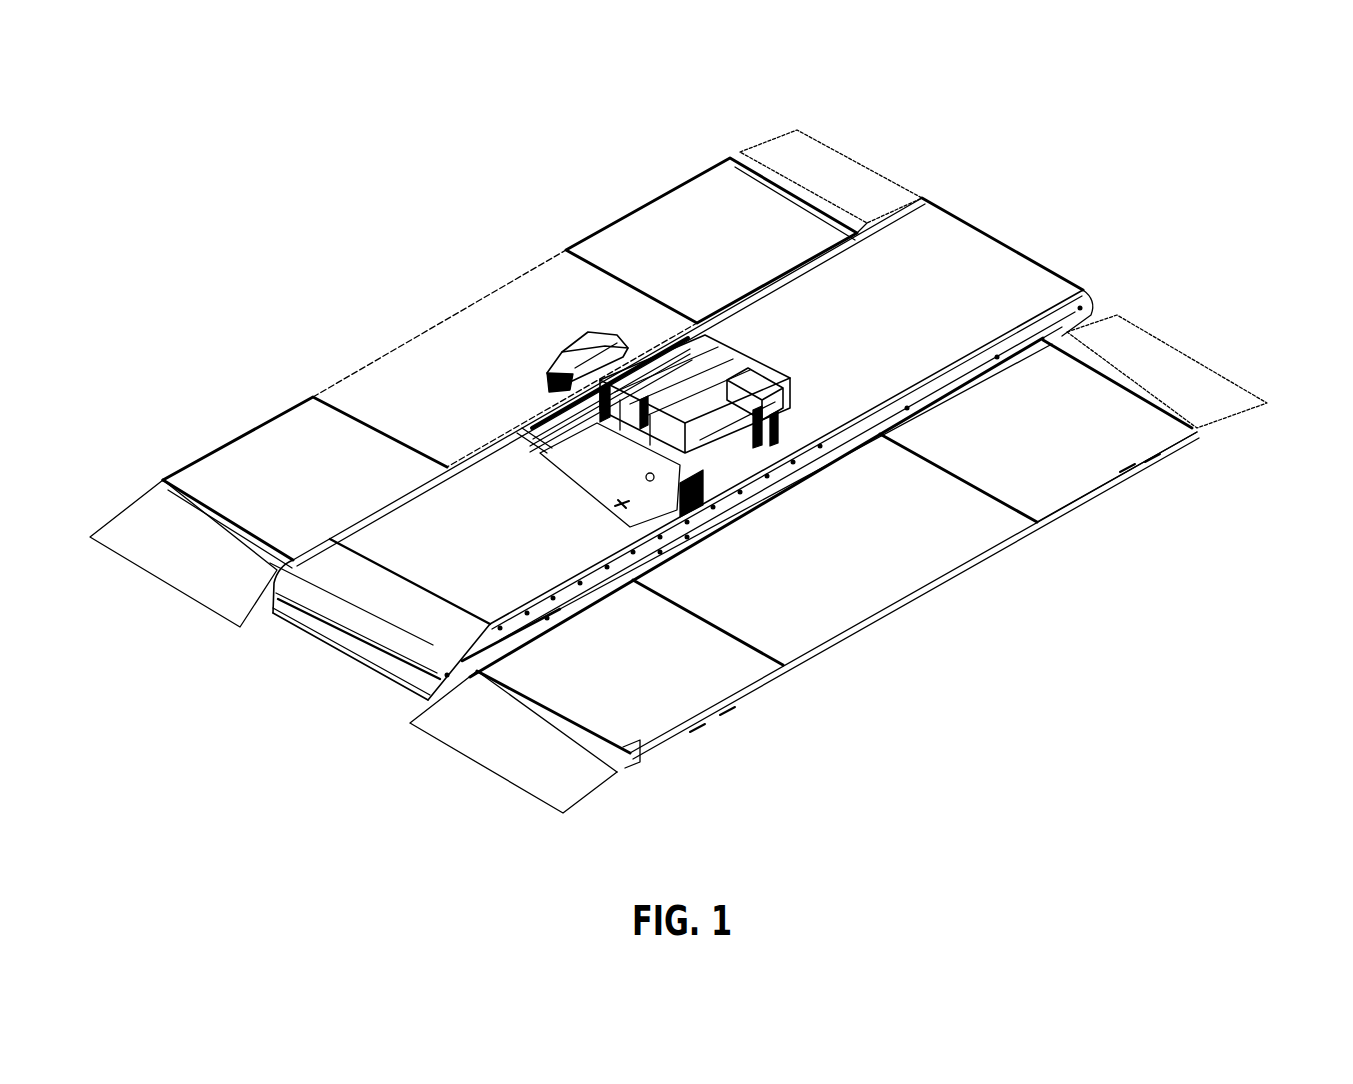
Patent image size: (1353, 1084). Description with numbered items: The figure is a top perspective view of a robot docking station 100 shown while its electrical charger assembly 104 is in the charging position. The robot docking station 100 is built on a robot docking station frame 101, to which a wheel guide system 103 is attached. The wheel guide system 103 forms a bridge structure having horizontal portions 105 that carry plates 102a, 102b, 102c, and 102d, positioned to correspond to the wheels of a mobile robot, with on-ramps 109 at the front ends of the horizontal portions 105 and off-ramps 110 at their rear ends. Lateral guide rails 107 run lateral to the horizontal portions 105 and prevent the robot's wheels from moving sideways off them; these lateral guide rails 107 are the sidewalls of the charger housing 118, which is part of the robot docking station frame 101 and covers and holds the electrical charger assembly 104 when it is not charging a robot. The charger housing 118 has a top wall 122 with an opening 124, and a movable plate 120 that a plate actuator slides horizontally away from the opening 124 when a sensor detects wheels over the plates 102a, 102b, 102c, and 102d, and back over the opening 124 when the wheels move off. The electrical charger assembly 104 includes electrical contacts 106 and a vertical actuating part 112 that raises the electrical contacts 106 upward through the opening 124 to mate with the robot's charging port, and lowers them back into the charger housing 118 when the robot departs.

The robot docking station 100 is at (722, 445).
The robot docking station frame 101 is at (729, 501).
The plate 102a is at (636, 226).
The plate 102b is at (303, 430).
The plate 102c is at (1147, 443).
The plate 102d is at (733, 683).
The wheel guide system 103 is at (383, 730).
The electrical charger assembly 104 is at (553, 327).
The horizontal portions 105 is at (420, 360).
The electrical contacts 106 is at (590, 335).
The lateral guide rails 107 is at (1067, 310).
The on-ramps 109 is at (137, 527).
The off-ramps 110 is at (813, 158).
The vertical actuating part 112 is at (703, 355).
The charger housing 118 is at (910, 228).
The movable plate 120 is at (478, 507).
The top wall 122 is at (965, 243).
The opening 124 is at (530, 397).